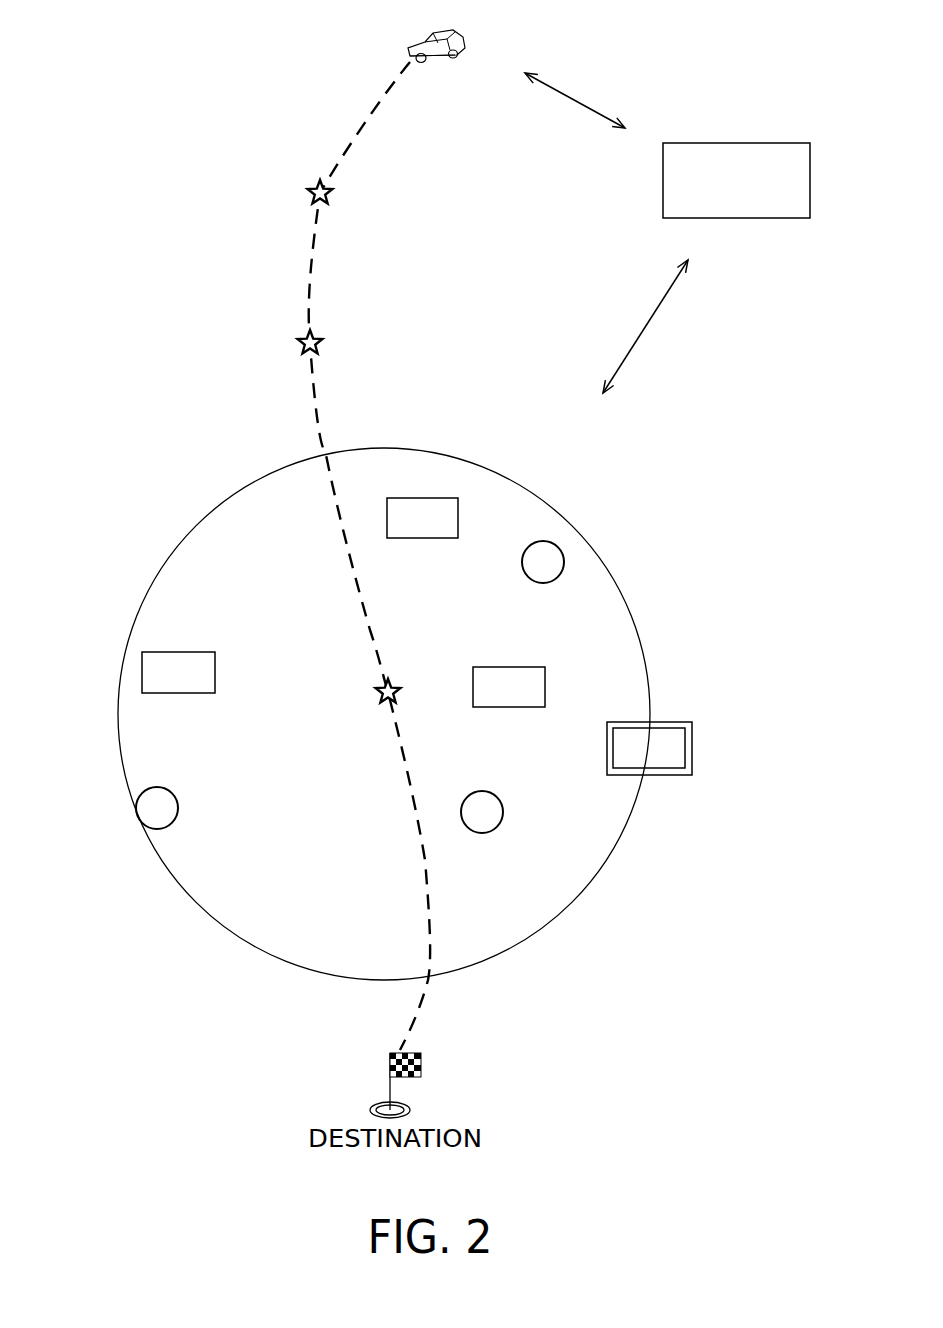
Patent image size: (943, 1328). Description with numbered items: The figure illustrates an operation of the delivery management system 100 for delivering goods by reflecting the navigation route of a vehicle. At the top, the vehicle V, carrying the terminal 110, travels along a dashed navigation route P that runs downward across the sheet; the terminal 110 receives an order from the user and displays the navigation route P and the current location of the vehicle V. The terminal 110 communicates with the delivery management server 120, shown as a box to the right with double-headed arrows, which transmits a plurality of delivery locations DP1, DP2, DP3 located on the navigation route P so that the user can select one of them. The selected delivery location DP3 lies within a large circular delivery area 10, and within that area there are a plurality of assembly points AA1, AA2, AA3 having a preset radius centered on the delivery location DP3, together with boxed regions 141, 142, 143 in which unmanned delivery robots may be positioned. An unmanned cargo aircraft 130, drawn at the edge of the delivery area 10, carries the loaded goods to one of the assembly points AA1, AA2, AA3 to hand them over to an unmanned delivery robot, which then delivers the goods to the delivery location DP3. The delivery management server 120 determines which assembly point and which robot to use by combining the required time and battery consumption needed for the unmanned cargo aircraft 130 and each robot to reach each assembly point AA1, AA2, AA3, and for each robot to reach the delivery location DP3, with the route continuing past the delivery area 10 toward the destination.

The delivery management system 100 is at (203, 28).
The vehicle V is at (506, 42).
The terminal 110 is at (465, 44).
The delivery management server 120 is at (667, 233).
The delivery area 10 is at (208, 512).
The unmanned cargo aircraft 130 is at (649, 748).
The first area 141 is at (422, 518).
The second area 142 is at (509, 687).
The third area 143 is at (178, 672).
The navigation route P is at (308, 270).
The delivery location DP1 is at (333, 193).
The delivery location DP2 is at (318, 335).
The delivery location DP3 is at (380, 700).
The assembly point AA1 is at (548, 553).
The assembly point AA2 is at (485, 822).
The assembly point AA3 is at (157, 822).